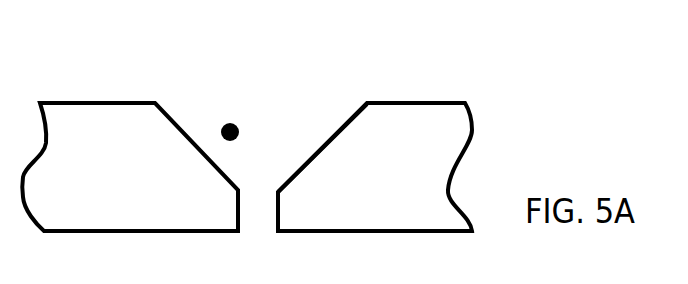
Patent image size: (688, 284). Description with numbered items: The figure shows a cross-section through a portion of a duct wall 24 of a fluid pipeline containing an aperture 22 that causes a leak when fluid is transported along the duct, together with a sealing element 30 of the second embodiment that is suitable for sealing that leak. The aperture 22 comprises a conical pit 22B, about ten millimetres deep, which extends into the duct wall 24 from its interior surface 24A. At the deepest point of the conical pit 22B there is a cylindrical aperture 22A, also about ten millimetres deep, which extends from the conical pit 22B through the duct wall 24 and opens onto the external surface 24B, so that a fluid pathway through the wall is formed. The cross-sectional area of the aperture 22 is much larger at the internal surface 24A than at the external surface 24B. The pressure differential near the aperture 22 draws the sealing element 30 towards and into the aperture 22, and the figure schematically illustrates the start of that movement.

The aperture 22 is at (264, 225).
The cylindrical aperture 22A is at (252, 215).
The conical pit 22B is at (298, 128).
The duct wall 24 is at (442, 231).
The interior surface 24A is at (420, 100).
The external surface 24B is at (95, 232).
The sealing element 30 is at (236, 125).